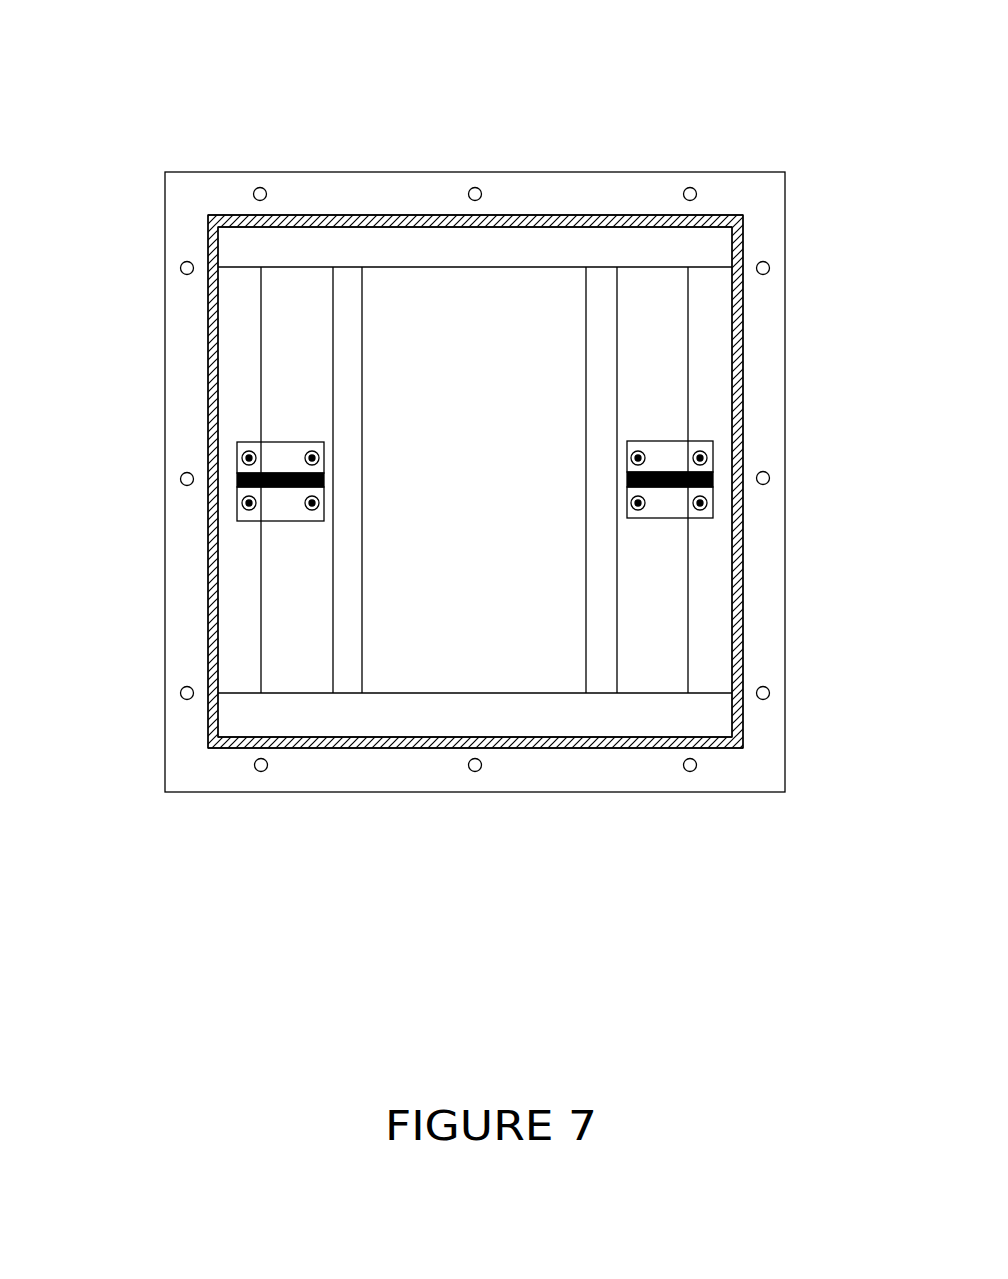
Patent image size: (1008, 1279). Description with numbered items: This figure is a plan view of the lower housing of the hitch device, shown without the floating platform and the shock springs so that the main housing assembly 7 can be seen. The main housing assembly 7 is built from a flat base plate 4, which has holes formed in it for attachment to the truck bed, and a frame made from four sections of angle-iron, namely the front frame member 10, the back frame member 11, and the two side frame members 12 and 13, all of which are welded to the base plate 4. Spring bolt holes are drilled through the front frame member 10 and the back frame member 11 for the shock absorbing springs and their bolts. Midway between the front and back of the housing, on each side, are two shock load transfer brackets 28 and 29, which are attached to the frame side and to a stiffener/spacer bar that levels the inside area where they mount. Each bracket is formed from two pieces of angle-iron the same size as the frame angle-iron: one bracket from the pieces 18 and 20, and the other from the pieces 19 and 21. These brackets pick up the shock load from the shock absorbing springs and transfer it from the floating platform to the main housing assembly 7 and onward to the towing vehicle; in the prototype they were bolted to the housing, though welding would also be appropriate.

The main housing assembly 7 is at (825, 105).
The base plate 4 is at (524, 447).
The front frame member 10 is at (435, 215).
The back frame member 11 is at (407, 748).
The frame member 12 is at (742, 449).
The frame member 13 is at (208, 500).
The angle-iron piece 18 is at (665, 452).
The angle-iron piece 19 is at (280, 456).
The angle-iron piece 20 is at (670, 497).
The angle-iron piece 21 is at (285, 505).
The shock load transfer bracket 28 is at (710, 478).
The shock load transfer bracket 29 is at (240, 477).